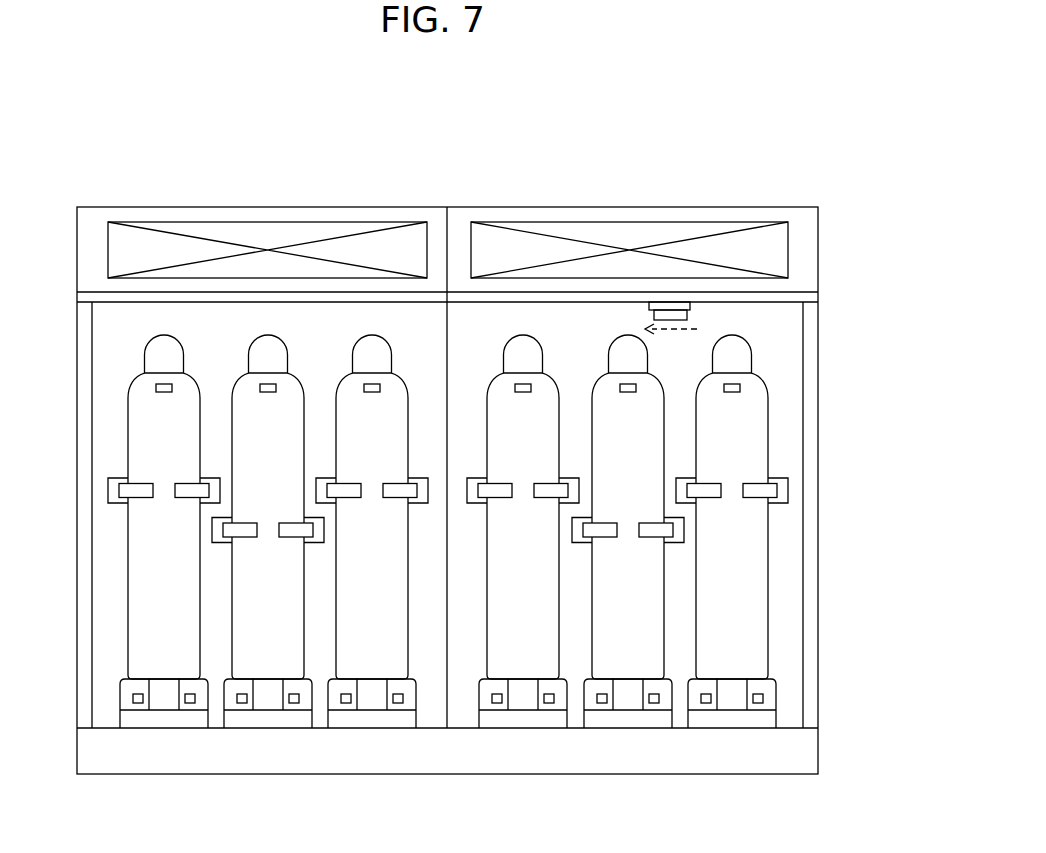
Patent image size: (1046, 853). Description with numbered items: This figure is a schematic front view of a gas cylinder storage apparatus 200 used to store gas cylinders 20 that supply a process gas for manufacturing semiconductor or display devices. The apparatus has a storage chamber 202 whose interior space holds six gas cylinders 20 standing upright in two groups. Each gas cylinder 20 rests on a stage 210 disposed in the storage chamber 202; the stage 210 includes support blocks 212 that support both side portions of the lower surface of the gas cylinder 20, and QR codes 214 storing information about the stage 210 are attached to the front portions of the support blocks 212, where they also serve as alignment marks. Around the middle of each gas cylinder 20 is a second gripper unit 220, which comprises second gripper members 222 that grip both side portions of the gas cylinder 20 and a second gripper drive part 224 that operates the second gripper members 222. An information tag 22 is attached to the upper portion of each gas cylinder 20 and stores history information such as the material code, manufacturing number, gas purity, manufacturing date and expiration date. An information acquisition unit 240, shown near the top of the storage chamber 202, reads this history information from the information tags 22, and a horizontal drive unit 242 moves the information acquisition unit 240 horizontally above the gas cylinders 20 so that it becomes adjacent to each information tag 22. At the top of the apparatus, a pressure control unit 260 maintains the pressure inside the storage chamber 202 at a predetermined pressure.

The gas cylinder storage apparatus 200 is at (781, 178).
The storage chamber 202 is at (797, 573).
The stage 210 is at (732, 726).
The support block 212 is at (768, 688).
The QR code 214 is at (762, 699).
The second gripper unit 220 is at (785, 464).
The second gripper member 222 is at (774, 486).
The second gripper drive part 224 is at (787, 496).
The information acquisition unit 240 is at (690, 313).
The horizontal drive unit 242 is at (580, 297).
The pressure control unit 260 is at (533, 226).
The gas cylinder 20 is at (760, 647).
The information tag 22 is at (740, 384).